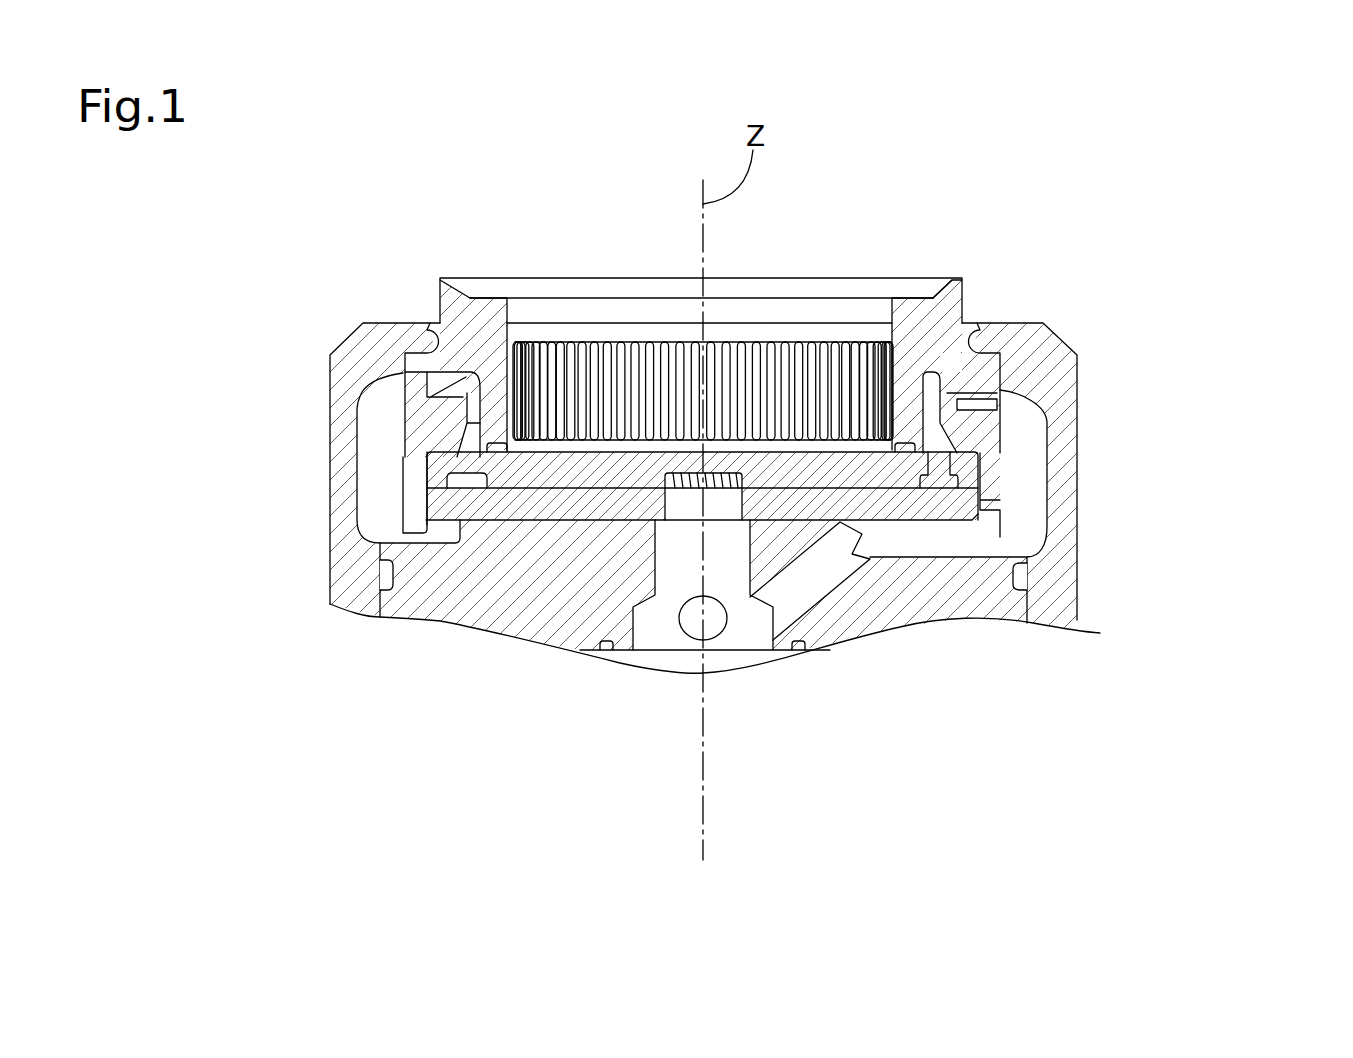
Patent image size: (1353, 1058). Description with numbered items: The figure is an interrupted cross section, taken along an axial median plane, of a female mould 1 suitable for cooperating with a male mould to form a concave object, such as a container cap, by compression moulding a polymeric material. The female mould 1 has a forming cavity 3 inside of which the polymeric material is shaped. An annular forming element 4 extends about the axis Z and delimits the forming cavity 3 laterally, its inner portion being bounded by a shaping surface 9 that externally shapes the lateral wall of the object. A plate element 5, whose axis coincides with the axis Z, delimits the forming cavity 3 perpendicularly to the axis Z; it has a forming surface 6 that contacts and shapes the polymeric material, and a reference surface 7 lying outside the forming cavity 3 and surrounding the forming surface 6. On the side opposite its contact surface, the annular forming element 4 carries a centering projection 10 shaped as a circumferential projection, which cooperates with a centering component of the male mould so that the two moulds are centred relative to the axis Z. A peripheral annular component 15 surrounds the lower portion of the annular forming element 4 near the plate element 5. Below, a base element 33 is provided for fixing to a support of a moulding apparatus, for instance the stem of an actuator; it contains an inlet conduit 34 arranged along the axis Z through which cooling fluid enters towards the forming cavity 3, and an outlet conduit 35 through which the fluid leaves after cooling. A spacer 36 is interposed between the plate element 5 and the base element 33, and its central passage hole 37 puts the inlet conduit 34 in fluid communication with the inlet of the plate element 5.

The female mould 1 is at (1205, 305).
The forming cavity 3 is at (853, 330).
The annular forming element 4 is at (467, 330).
The plate element 5 is at (593, 467).
The forming surface 6 is at (793, 417).
The reference surface 7 is at (893, 450).
The shaping surface 9 is at (513, 397).
The centering projection 10 is at (950, 283).
The peripheral annular component 15 is at (992, 465).
The base element 33 is at (378, 604).
The inlet conduit 34 is at (657, 560).
The outlet conduit 35 is at (817, 573).
The spacer 36 is at (457, 508).
The passage hole 37 is at (745, 490).